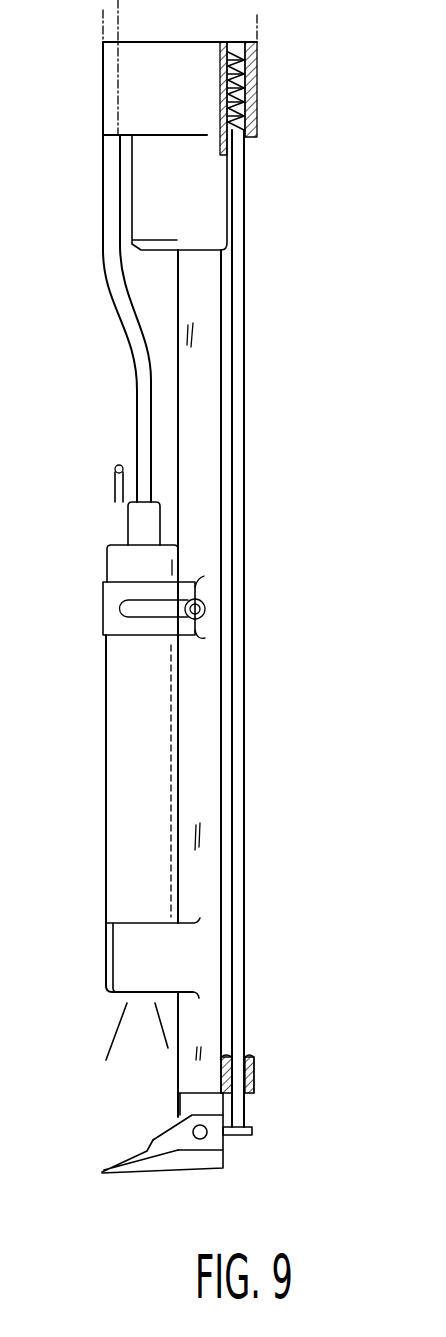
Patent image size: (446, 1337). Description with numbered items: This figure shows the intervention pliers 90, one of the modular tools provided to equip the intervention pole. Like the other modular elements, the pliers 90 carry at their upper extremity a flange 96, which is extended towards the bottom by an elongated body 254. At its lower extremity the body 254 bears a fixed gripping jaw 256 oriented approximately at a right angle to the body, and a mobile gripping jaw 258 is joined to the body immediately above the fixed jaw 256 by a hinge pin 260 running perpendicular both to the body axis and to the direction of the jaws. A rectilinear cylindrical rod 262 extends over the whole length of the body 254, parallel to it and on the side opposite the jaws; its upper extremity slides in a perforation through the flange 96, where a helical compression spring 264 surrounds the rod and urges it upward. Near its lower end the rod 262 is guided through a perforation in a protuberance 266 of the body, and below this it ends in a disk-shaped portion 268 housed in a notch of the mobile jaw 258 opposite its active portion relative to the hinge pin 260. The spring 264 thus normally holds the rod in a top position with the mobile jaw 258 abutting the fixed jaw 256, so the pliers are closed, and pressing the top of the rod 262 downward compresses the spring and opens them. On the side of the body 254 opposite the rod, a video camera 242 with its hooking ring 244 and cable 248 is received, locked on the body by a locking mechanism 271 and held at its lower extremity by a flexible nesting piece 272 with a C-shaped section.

The intervention pliers 90 is at (292, 488).
The flange 96 is at (147, 90).
The video camera 242 is at (115, 812).
The hooking ring 244 is at (112, 474).
The cable 248 is at (135, 390).
The elongated body 254 is at (210, 423).
The fixed gripping jaw 256 is at (138, 1174).
The mobile gripping jaw 258 is at (145, 1148).
The hinge pin 260 is at (210, 1135).
The rectilinear cylindrical rod 262 is at (242, 618).
The helical compression spring 264 is at (258, 98).
The protuberance 266 is at (253, 1082).
The disk-shaped portion 268 is at (252, 1137).
The locking mechanism 271 is at (147, 642).
The flexible nesting piece 272 is at (133, 922).